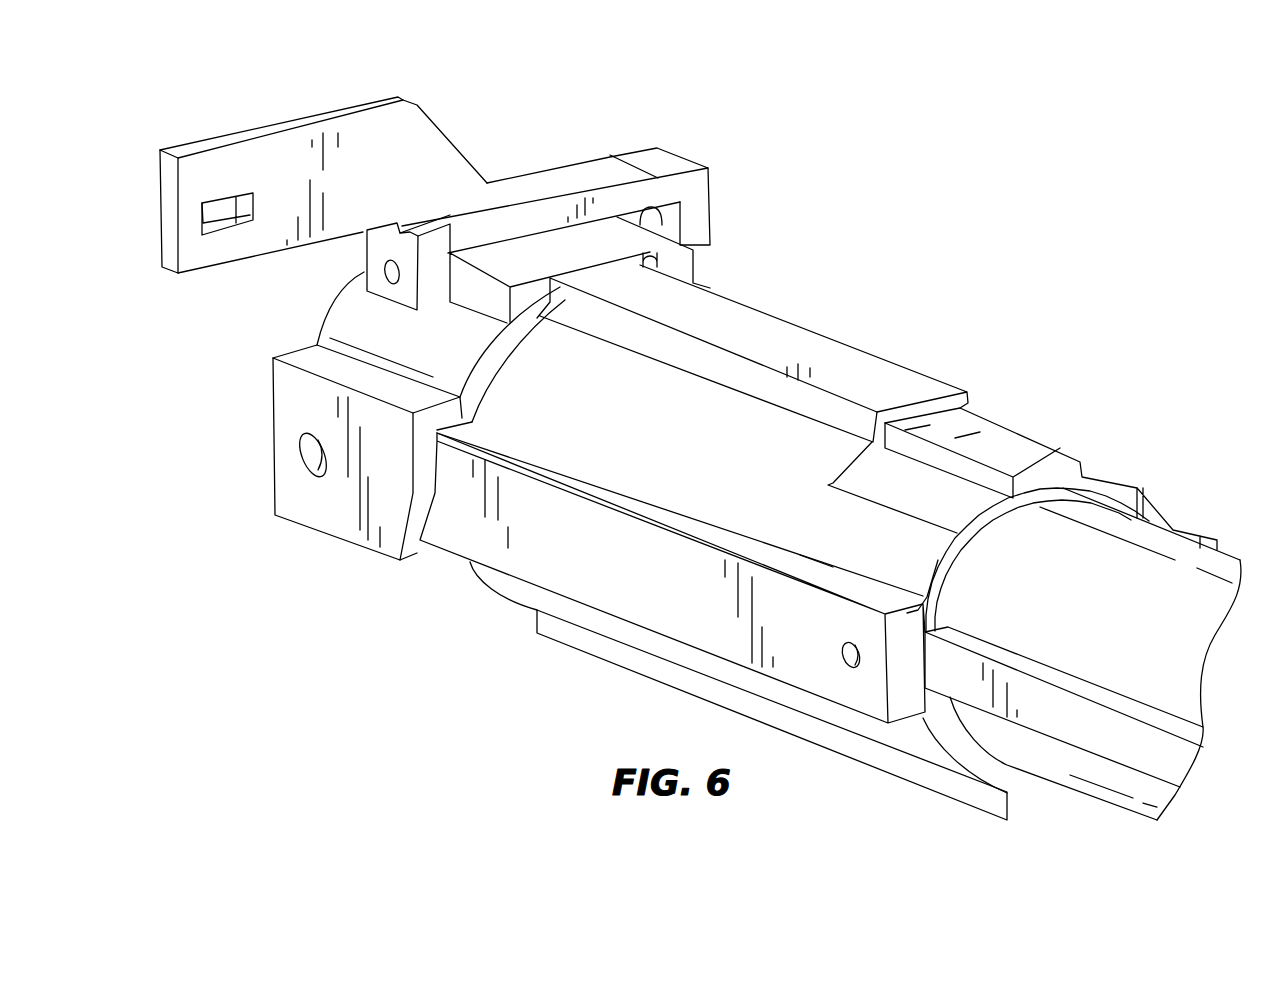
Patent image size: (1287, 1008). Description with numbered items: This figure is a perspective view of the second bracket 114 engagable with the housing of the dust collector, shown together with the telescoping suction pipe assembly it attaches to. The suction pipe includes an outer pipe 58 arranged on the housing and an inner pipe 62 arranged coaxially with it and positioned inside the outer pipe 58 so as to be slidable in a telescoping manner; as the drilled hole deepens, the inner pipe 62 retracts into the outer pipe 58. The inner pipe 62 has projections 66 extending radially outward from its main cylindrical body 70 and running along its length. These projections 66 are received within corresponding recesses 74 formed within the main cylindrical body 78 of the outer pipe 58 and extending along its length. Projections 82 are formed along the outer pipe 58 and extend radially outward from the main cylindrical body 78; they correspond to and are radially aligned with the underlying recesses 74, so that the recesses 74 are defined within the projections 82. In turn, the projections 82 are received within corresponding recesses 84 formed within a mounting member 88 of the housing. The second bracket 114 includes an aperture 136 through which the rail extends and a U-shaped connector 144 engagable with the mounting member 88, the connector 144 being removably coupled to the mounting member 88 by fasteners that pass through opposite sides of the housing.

The outer pipe 58 is at (875, 342).
The inner pipe 62 is at (1068, 531).
The projections 66 is at (1103, 730).
The main cylindrical body 70 is at (1147, 593).
The recesses 74 is at (923, 717).
The main cylindrical body 78 is at (747, 427).
The projections 82 is at (737, 325).
The recesses 84 is at (433, 450).
The mounting member 88 is at (297, 415).
The second bracket 114 is at (292, 127).
The aperture 136 is at (233, 223).
The U-shaped connector 144 is at (582, 170).